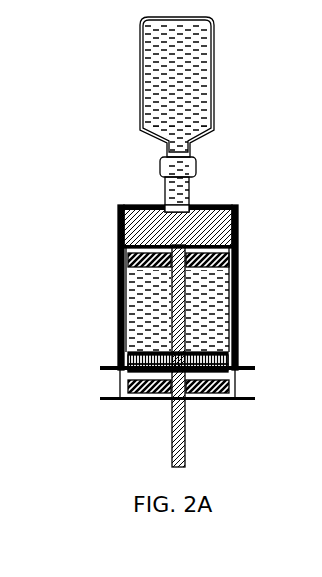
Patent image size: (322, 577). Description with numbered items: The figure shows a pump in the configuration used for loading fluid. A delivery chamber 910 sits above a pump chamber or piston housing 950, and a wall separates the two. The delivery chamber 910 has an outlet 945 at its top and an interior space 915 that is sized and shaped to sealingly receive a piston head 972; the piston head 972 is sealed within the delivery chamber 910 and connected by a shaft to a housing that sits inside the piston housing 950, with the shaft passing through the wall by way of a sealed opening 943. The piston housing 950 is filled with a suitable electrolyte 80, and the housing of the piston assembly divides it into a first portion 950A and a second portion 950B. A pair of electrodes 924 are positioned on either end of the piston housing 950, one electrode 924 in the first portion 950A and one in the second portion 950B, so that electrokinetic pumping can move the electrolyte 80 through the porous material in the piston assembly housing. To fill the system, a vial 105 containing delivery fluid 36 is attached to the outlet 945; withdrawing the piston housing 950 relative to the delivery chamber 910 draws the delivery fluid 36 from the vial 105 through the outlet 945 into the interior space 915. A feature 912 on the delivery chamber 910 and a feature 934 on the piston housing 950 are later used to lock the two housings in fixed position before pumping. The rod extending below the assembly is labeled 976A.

The vial 105 is at (214, 78).
The delivery fluid 36 is at (177, 87).
The outlet 945 is at (189, 193).
The delivery chamber 910 is at (238, 228).
The interior space 915 is at (118, 281).
The piston head 972 is at (178, 226).
The electrode 924 is at (229, 262).
The piston rod 976A is at (186, 440).
The electrolyte 80 is at (178, 311).
The sealed opening 943 is at (190, 276).
The pump chamber or piston housing 950 is at (124, 316).
The second portion 950B is at (128, 340).
The first portion 950A is at (128, 375).
The feature 912 is at (250, 365).
The feature 934 is at (105, 400).